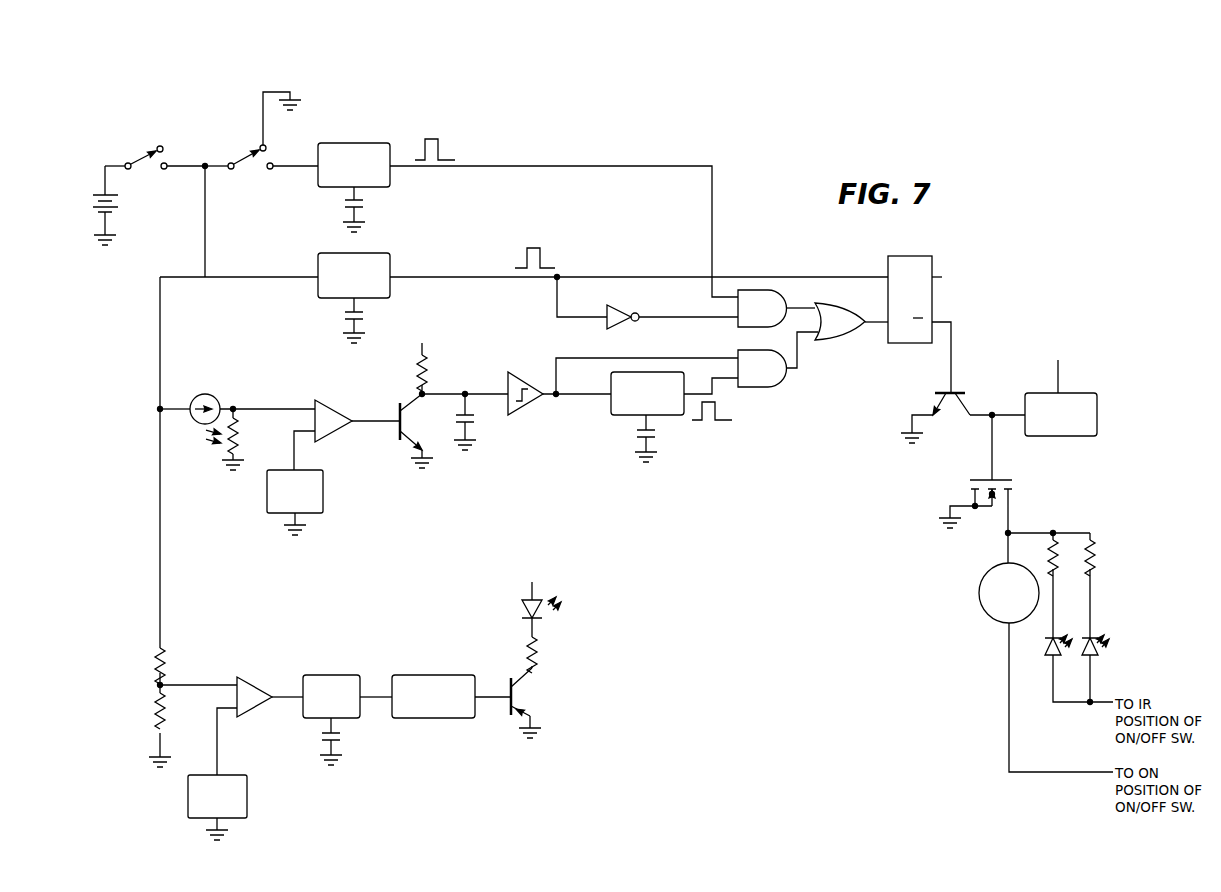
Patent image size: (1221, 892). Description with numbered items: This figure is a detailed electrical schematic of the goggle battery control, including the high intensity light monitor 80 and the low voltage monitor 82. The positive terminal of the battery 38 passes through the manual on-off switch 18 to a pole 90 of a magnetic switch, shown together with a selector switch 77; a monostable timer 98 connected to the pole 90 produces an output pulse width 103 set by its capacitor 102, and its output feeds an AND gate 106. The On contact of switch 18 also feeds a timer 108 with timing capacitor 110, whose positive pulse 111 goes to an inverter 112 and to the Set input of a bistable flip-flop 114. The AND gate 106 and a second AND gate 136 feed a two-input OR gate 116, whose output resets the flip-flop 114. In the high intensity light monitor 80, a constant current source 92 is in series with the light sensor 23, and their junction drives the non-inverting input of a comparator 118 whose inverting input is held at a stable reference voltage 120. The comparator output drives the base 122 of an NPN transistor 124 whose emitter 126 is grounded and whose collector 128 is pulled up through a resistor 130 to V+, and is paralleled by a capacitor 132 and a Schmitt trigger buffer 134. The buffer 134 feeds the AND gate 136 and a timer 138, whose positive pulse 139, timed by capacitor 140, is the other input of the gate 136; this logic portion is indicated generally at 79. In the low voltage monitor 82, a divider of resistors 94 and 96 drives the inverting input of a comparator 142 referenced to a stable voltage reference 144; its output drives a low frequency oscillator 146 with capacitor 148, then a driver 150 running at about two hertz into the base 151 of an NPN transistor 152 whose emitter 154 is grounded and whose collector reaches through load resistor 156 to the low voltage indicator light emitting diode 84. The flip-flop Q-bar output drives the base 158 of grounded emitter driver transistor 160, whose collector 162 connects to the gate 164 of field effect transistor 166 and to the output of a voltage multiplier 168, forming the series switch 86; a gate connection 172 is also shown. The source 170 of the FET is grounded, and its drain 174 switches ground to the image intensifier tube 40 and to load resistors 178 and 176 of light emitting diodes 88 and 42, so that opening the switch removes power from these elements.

The manual on-off switch 18 is at (134, 151).
The battery 38 is at (120, 204).
The mode selector switch 77 is at (241, 157).
The pole of magnetic switch 90 is at (231, 170).
The monostable timer 98 is at (343, 143).
The capacitor 102 is at (363, 206).
The output pulse width 103 is at (455, 156).
The timer 108 is at (392, 261).
The timing capacitor 110 is at (363, 318).
The positive pulse 111 is at (545, 262).
The inverter 112 is at (632, 304).
The AND gate 106 is at (773, 318).
The two-input AND gate 136 is at (773, 378).
The two-input OR gate 116 is at (849, 331).
The bistable flip-flop 114 is at (932, 256).
The base 158 is at (951, 348).
The grounded emitter driver transistor 160 is at (934, 401).
The collector 162 is at (970, 408).
The voltage multiplier 168 is at (1090, 436).
The series switch 86 is at (1112, 381).
The gate 164 is at (992, 453).
The field effect transistor 166 is at (1004, 475).
The gate line 172 is at (966, 491).
The source 170 is at (992, 508).
The drain 174 is at (1011, 506).
The load resistor 178 is at (1056, 552).
The load resistor 176 is at (1094, 564).
The image intensifier tube 40 is at (983, 615).
The light emitting diode 88 is at (1047, 649).
The light emitting diode 42 is at (1085, 649).
The constant current source 92 is at (211, 395).
The light sensor 23 is at (243, 440).
The comparator 118 is at (352, 398).
The stable reference voltage 120 is at (323, 505).
The high intensity light monitor 80 is at (388, 413).
The NPN transistor 124 is at (452, 433).
The base 122 is at (398, 431).
The emitter 126 is at (413, 447).
The collector 128 is at (412, 401).
The resistor 130 is at (426, 376).
The capacitor 132 is at (476, 432).
The Schmitt trigger type of buffer 134 is at (540, 363).
The timer 138 is at (611, 414).
The positive pulse 139 is at (724, 412).
The timing capacitor 140 is at (656, 436).
The control logic circuit 79 is at (614, 490).
The resistor 94 is at (148, 660).
The resistor 96 is at (150, 726).
The comparator 142 is at (265, 669).
The stable voltage reference 144 is at (247, 812).
The low frequency oscillator 146 is at (336, 675).
The low voltage monitor 82 is at (342, 648).
The capacitor 148 is at (341, 740).
The driver 150 is at (421, 675).
The base 151 is at (490, 698).
The NPN transistor 152 is at (526, 707).
The emitter 154 is at (517, 720).
The load resistor 156 is at (540, 648).
The low voltage indicator light emitting diode 84 is at (522, 612).